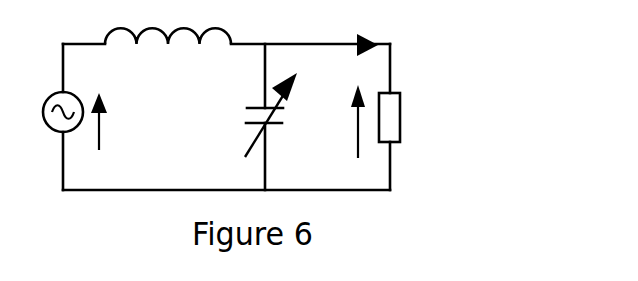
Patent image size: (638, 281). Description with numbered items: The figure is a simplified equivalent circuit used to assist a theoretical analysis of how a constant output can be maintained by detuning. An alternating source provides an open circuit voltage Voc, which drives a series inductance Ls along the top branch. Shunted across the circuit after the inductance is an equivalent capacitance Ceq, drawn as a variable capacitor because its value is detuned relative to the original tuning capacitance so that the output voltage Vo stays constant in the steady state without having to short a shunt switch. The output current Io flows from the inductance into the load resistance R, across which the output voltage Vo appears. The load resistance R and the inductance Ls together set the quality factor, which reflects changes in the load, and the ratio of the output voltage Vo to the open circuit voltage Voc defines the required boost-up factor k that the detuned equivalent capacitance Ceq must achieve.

The inductance Ls is at (168, 61).
The equivalent capacitance Ceq is at (243, 115).
The load resistance R is at (411, 117).
The open circuit voltage Voc is at (123, 122).
The output voltage Vo is at (340, 121).
The output current Io is at (353, 28).